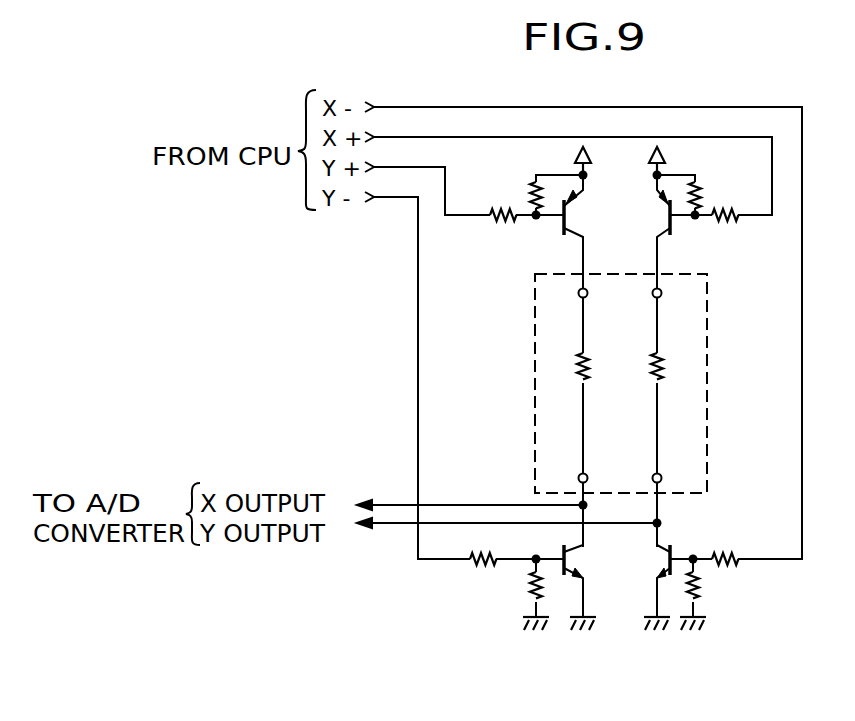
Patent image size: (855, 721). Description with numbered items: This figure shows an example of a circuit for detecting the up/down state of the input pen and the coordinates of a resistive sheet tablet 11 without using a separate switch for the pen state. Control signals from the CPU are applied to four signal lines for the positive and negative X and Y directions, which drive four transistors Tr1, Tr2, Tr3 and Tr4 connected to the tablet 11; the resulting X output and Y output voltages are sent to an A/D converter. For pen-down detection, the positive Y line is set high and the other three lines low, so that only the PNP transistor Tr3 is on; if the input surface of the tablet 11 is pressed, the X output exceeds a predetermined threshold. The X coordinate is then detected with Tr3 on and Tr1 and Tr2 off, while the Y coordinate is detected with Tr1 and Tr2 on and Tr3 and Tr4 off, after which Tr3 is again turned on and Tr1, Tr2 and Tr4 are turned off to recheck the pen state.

The tablet 11 is at (535, 397).
The transistor Tr1 is at (550, 234).
The transistor Tr2 is at (548, 575).
The PNP transistor Tr3 is at (686, 234).
The transistor Tr4 is at (681, 574).